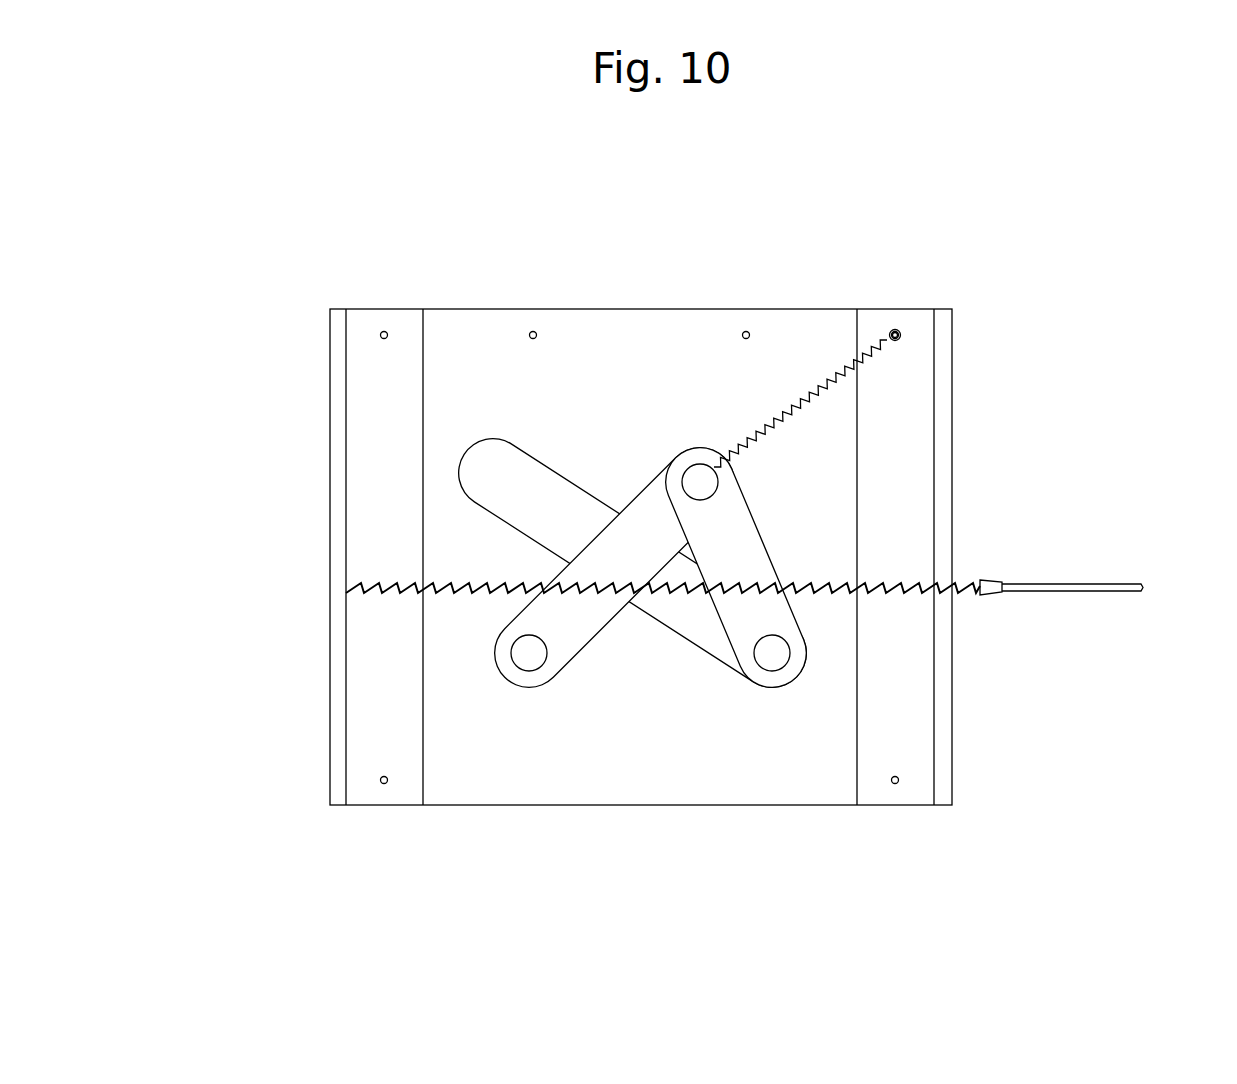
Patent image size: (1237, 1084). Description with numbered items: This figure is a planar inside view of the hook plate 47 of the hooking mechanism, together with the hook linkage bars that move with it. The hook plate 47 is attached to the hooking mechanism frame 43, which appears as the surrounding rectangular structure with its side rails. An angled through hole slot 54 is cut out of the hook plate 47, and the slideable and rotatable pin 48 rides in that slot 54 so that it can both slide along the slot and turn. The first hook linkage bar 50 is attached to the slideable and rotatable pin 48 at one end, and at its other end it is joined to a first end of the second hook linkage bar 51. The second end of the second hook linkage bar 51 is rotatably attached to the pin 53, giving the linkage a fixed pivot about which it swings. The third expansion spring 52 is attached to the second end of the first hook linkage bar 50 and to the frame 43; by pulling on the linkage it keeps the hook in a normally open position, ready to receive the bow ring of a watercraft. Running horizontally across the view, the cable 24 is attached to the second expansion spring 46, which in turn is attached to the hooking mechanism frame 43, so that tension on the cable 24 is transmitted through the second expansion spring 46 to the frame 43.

The cable 24 is at (1084, 597).
The hooking mechanism frame 43 is at (326, 425).
The second expansion spring 46 is at (902, 606).
The hook plate 47 is at (669, 825).
The slideable and rotatable pin 48 is at (783, 692).
The first hook linkage bar 50 is at (768, 512).
The second hook linkage bar 51 is at (502, 613).
The third expansion spring 52 is at (828, 360).
The pin 53 is at (526, 692).
The angled through hole slot 54 is at (493, 425).